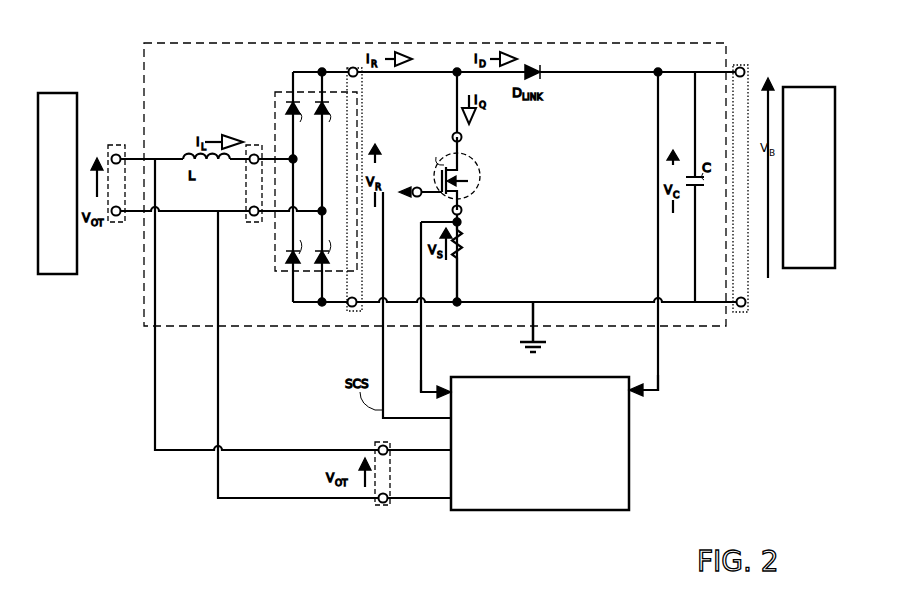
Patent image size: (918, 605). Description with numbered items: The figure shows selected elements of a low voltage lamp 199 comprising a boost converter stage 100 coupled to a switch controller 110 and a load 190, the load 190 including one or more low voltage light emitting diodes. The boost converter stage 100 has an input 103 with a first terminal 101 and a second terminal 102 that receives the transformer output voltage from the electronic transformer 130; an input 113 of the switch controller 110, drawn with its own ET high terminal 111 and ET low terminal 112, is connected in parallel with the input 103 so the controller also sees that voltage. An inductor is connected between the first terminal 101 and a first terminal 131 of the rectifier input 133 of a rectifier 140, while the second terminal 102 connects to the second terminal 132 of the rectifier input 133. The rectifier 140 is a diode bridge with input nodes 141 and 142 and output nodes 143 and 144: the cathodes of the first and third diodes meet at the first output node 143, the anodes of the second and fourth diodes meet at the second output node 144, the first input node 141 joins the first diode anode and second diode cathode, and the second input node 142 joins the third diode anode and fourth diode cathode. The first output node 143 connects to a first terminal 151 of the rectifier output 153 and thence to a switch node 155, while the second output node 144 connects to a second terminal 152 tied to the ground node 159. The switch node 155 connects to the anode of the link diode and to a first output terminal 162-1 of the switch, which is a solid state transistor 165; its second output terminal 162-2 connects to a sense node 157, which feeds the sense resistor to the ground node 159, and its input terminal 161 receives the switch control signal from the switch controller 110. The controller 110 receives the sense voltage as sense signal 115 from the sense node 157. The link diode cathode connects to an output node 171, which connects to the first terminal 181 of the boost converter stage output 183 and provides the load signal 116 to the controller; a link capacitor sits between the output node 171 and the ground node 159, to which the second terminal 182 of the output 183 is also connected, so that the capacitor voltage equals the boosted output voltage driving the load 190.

The boost converter stage 100 is at (572, 43).
The first terminal 101 is at (112, 156).
The second terminal 102 is at (117, 216).
The input 103 is at (128, 150).
The switch controller 110 is at (598, 490).
The ET high terminal 111 is at (385, 446).
The ET low terminal 112 is at (385, 502).
The input 113 is at (388, 487).
The sense signal 115 is at (421, 380).
The LOAD signal 116 is at (662, 388).
The electronic transformer 130 is at (71, 202).
The first terminal 131 is at (253, 164).
The second terminal 132 is at (253, 206).
The rectifier input 133 is at (252, 222).
The rectifier 140 is at (275, 114).
The first input node 141 is at (296, 162).
The second input node 142 is at (326, 210).
The first output node 143 is at (322, 68).
The second output node 144 is at (322, 306).
The first terminal 151 is at (358, 75).
The second terminal 152 is at (350, 307).
The rectifier output 153 is at (362, 142).
The switch node 155 is at (455, 69).
The sense node 157 is at (462, 223).
The ground node 159 is at (459, 307).
The input terminal 161 is at (416, 188).
The first output terminal 162-1 is at (452, 135).
The second output terminal 162-2 is at (462, 210).
The solid state transistor 165 is at (462, 181).
The output node 171 is at (656, 69).
The first terminal 181 is at (745, 69).
The second terminal 182 is at (746, 304).
The boost converter stage output 183 is at (748, 284).
The load 190 is at (823, 197).
The low voltage lamp 199 is at (722, 509).